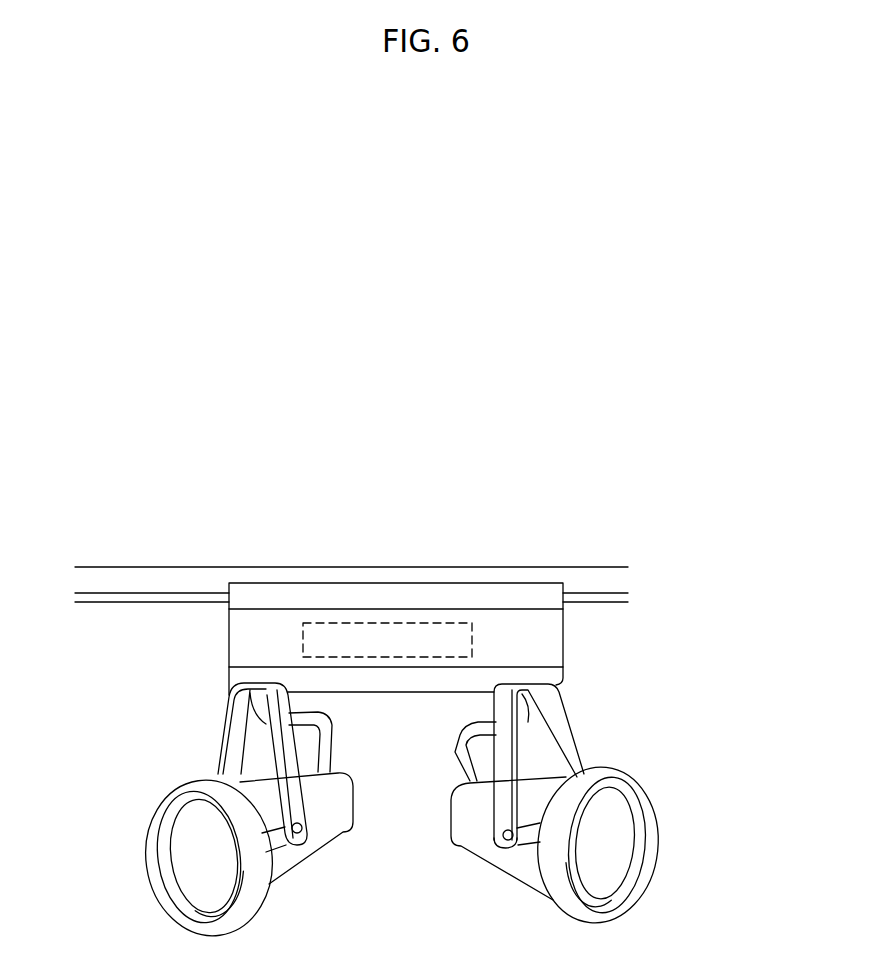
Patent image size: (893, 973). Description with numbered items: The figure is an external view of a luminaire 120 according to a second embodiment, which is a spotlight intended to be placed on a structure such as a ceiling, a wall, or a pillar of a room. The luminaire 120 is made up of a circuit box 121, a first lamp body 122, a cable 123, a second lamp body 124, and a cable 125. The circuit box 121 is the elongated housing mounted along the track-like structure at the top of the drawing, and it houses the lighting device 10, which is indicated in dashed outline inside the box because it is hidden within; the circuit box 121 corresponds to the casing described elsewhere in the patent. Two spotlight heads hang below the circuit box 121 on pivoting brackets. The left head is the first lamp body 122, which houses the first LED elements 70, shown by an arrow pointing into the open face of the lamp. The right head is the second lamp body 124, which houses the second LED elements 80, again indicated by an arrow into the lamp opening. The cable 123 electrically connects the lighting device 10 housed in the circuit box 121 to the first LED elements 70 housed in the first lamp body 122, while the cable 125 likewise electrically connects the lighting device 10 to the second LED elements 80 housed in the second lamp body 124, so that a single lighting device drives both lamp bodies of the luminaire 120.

The lighting device 10 is at (425, 623).
The luminaire 120 is at (721, 535).
The circuit box 121 is at (542, 639).
The first lamp body 122 is at (203, 792).
The cable 123 is at (330, 740).
The second lamp body 124 is at (612, 770).
The cable 125 is at (455, 752).
The first LED elements 70 is at (210, 845).
The second LED elements 80 is at (593, 850).